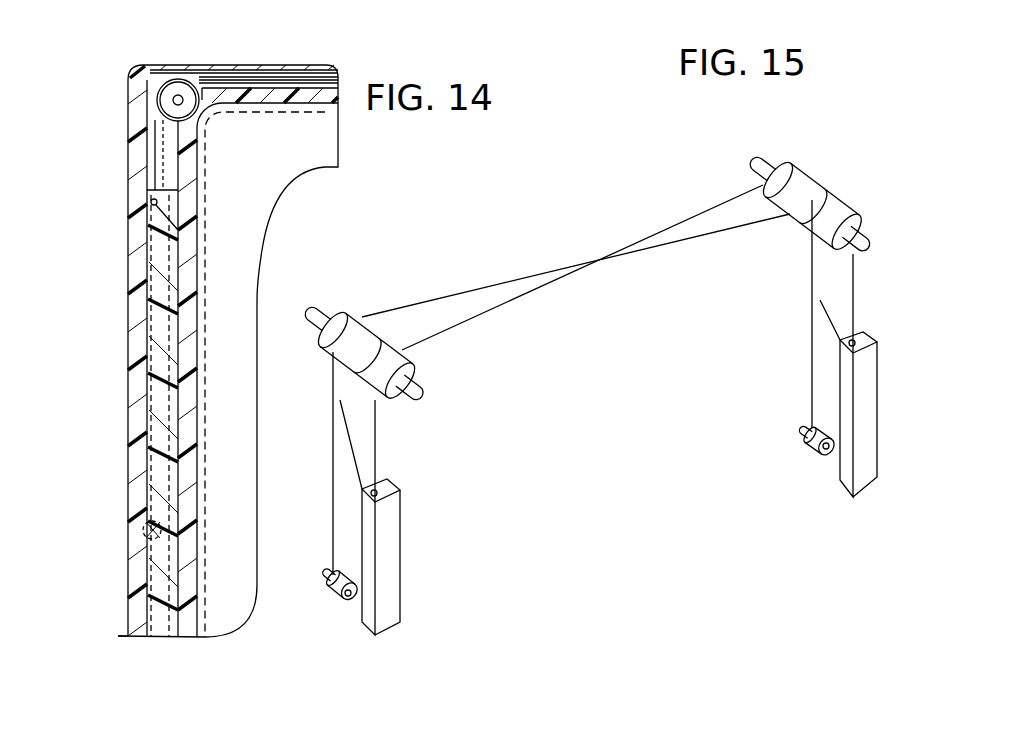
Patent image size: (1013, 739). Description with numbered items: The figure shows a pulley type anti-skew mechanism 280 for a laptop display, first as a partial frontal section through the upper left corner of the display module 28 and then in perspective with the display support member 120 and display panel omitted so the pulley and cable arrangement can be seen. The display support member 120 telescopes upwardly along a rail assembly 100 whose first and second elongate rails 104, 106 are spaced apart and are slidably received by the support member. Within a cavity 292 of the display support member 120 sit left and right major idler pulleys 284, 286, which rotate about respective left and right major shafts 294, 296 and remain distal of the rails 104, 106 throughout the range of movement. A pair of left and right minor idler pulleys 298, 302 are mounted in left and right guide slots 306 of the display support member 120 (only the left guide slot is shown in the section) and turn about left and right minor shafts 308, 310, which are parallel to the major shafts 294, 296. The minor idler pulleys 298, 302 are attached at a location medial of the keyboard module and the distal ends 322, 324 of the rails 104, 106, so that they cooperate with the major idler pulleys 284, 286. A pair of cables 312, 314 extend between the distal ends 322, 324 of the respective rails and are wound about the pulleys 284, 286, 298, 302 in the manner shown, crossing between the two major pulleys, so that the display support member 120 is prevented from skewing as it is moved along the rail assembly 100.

In FIG. 14, the display module 28 is at (100, 422).
In FIG. 14, the rail assembly 100 is at (137, 648).
In FIG. 15, the rail assembly 100 is at (747, 498).
In FIG. 14, the first elongate rail 104 is at (155, 605).
In FIG. 15, the first elongate rail 104 is at (392, 535).
In FIG. 15, the second elongate rail 106 is at (845, 470).
In FIG. 14, the display support member 120 is at (128, 245).
In FIG. 14, the pulley type anti-skew mechanism 280 is at (158, 78).
In FIG. 15, the pulley type anti-skew mechanism 280 is at (850, 140).
In FIG. 14, the left major idler pulley 284 is at (200, 100).
In FIG. 15, the left major idler pulley 284 is at (343, 310).
In FIG. 15, the right major idler pulley 286 is at (788, 163).
In FIG. 14, the cavity 292 is at (167, 79).
In FIG. 14, the left major shaft 294 is at (187, 96).
In FIG. 15, the left major shaft 294 is at (423, 405).
In FIG. 15, the right major shaft 296 is at (858, 235).
In FIG. 14, the left minor idler pulley 298 is at (148, 556).
In FIG. 15, the left minor idler pulley 298 is at (338, 598).
In FIG. 15, the right minor idler pulley 302 is at (822, 447).
In FIG. 14, the guide slot 306 is at (152, 173).
In FIG. 14, the left minor shaft 308 is at (148, 537).
In FIG. 15, the left minor shaft 308 is at (353, 600).
In FIG. 15, the right minor shaft 310 is at (808, 432).
In FIG. 14, the cable 312 is at (290, 80).
In FIG. 15, the cable 312 is at (483, 285).
In FIG. 14, the cable 314 is at (158, 138).
In FIG. 15, the cable 314 is at (523, 294).
In FIG. 15, the distal end of first elongate rail 322 is at (385, 490).
In FIG. 15, the distal end of second elongate rail 324 is at (856, 340).